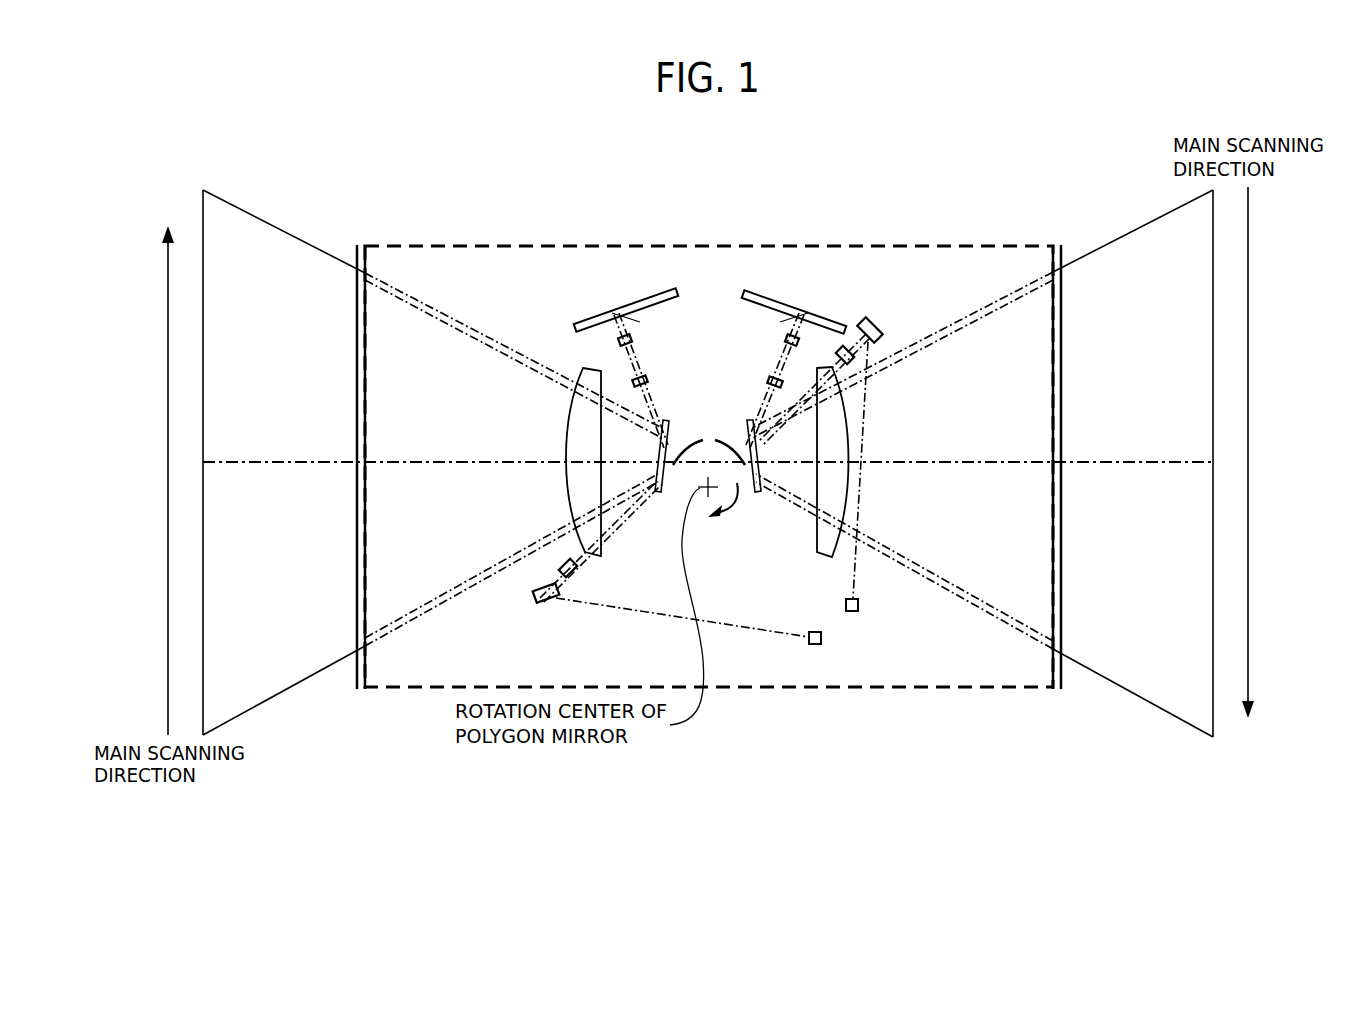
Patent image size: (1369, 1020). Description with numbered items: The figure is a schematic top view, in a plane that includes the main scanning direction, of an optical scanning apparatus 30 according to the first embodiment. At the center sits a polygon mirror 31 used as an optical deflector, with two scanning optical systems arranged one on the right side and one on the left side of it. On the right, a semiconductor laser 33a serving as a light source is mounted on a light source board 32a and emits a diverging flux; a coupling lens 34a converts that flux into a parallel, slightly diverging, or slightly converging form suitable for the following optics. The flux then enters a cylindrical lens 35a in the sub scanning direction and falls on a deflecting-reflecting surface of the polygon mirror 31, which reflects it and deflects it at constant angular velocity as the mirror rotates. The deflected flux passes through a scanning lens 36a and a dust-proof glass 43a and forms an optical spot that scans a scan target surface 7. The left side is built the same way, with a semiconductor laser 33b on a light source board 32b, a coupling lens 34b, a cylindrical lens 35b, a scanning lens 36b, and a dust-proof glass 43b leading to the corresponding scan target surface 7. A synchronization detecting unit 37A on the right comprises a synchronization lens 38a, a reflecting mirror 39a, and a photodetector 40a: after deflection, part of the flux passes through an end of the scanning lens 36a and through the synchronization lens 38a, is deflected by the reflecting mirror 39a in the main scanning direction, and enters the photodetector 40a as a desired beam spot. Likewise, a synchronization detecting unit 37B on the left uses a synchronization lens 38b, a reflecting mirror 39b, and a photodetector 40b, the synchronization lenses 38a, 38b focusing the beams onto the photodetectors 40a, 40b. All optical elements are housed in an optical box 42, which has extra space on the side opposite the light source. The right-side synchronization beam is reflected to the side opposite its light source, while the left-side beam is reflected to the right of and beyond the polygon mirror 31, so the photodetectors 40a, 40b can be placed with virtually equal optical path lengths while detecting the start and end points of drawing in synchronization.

The scan target surface 7 is at (206, 532).
The optical scanning apparatus 30 is at (833, 188).
The polygon mirror 31 is at (737, 488).
The light source board 32a is at (821, 325).
The light source board 32b is at (597, 325).
The semiconductor laser 33a is at (783, 301).
The semiconductor laser 33b is at (633, 301).
The coupling lens 34a is at (785, 338).
The coupling lens 34b is at (632, 338).
The cylindrical lens 35a is at (768, 381).
The cylindrical lens 35b is at (648, 381).
The scanning lens 36a is at (825, 558).
The scanning lens 36b is at (570, 485).
The synchronization detecting unit 37A is at (909, 314).
The synchronization detecting unit 37B is at (517, 634).
The synchronization lens 38a is at (838, 354).
The synchronization lens 38b is at (581, 573).
The reflecting mirror 39a is at (879, 325).
The reflecting mirror 39b is at (540, 598).
The photodetector 40a is at (860, 604).
The photodetector 40b is at (822, 637).
The optical box 42 is at (745, 688).
The dust-proof glass 43a is at (1061, 592).
The dust-proof glass 43b is at (357, 592).